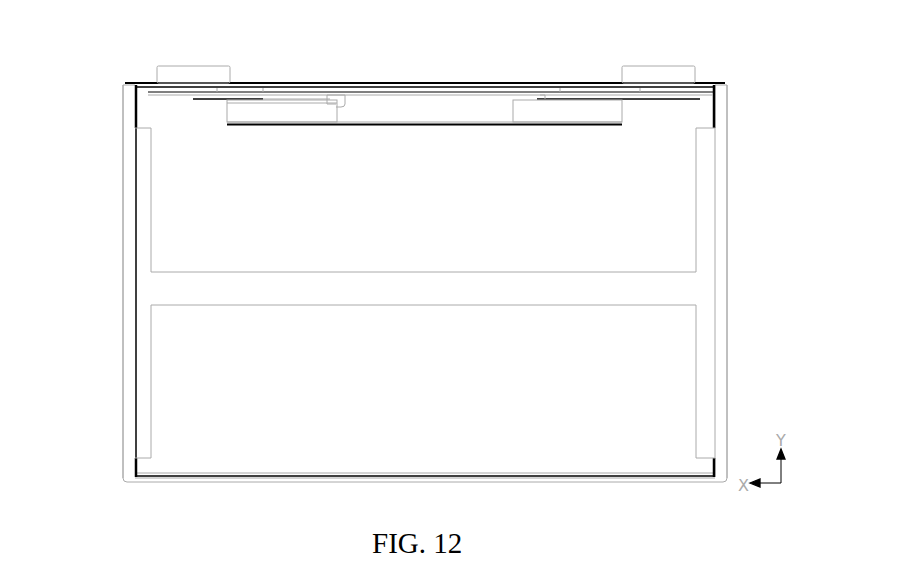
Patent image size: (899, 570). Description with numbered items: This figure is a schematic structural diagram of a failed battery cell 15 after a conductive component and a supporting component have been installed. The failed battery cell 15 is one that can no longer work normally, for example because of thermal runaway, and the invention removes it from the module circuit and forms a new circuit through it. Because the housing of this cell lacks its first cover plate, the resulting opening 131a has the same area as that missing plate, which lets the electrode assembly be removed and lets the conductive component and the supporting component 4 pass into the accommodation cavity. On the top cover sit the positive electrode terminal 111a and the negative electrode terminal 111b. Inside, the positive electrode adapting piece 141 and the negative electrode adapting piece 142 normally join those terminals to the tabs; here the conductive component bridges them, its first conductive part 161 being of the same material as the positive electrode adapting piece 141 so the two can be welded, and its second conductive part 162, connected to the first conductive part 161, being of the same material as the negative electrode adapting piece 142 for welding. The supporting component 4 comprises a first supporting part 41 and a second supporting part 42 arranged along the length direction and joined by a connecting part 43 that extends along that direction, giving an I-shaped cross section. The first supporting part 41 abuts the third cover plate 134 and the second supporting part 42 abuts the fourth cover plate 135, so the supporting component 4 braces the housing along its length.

The supporting component 4 is at (90, 315).
The failed battery cell 15 is at (95, 67).
The first supporting part 41 is at (137, 370).
The second supporting part 42 is at (703, 220).
The connecting part 43 is at (173, 285).
The positive electrode terminal 111a is at (192, 68).
The negative electrode terminal 111b is at (672, 68).
The opening 131a is at (152, 113).
The third cover plate 134 is at (123, 205).
The fourth cover plate 135 is at (722, 307).
The positive electrode adapting piece 141 is at (327, 96).
The negative electrode adapting piece 142 is at (537, 100).
The first conductive part 161 is at (257, 122).
The second conductive part 162 is at (602, 122).